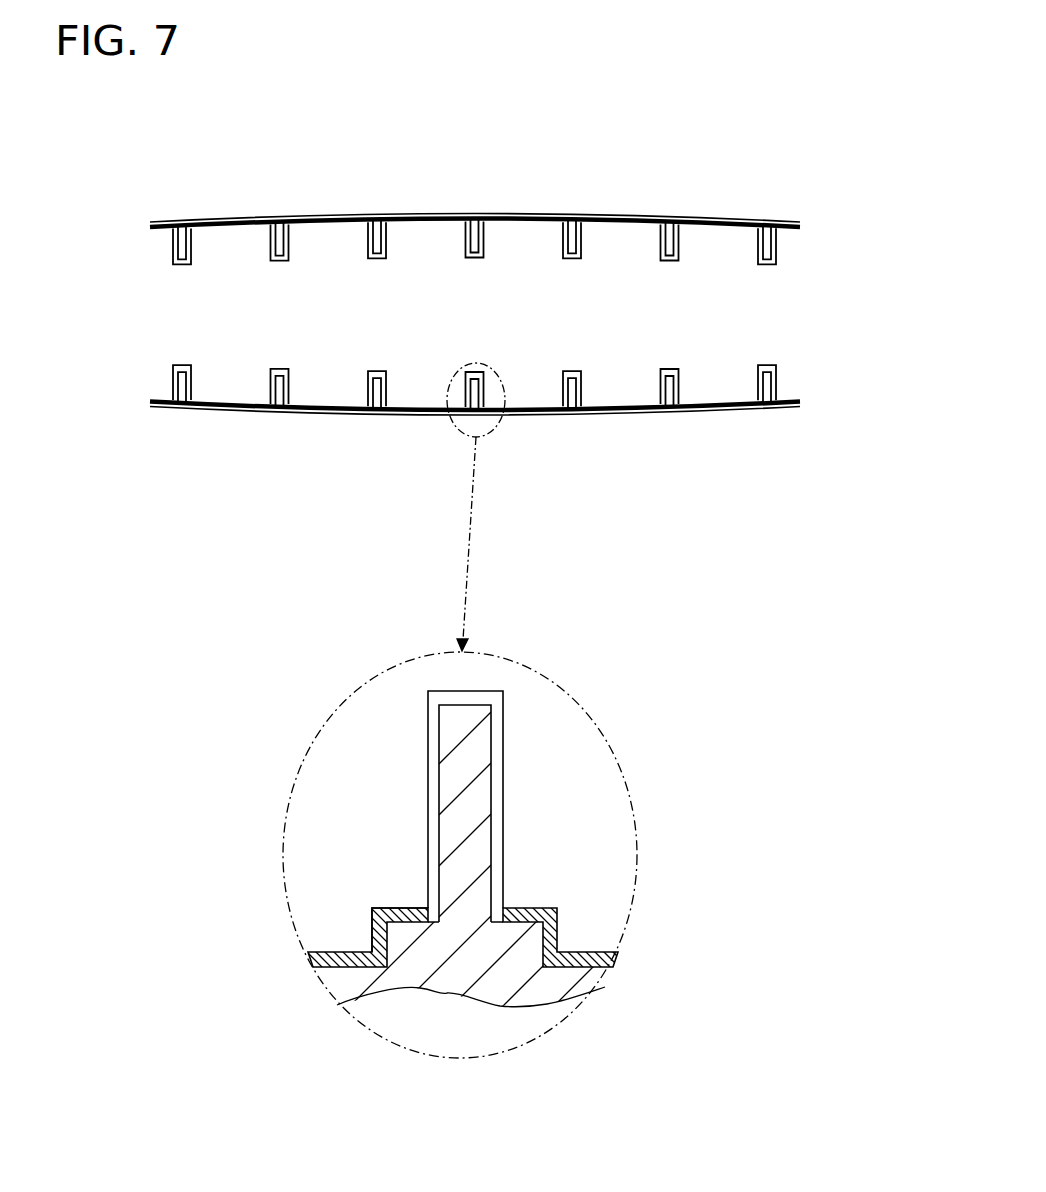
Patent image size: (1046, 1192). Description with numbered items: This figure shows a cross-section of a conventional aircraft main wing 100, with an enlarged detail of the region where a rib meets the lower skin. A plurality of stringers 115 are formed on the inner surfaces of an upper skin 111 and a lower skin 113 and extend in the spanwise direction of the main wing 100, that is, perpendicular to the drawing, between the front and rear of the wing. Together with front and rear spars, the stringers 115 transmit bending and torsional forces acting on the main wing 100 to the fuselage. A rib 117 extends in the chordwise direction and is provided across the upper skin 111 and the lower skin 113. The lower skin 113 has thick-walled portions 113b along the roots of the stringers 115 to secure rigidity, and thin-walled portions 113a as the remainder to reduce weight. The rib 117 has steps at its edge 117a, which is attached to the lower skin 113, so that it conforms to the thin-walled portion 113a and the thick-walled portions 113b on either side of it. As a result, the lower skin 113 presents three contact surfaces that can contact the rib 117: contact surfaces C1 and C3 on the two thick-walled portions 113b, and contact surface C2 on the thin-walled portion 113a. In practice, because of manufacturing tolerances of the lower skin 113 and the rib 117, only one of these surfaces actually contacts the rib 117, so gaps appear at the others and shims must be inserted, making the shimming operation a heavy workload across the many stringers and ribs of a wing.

The main wing 100 is at (508, 191).
The upper skin 111 is at (412, 214).
The lower skin 113 is at (410, 418).
The thin-walled portion 113a is at (338, 950).
The thick-walled portion 113b is at (393, 907).
The stringer 115 is at (288, 246).
The rib 117 is at (447, 318).
The edge of the rib 117a is at (593, 950).
The contact surface C1 is at (506, 906).
The contact surface C2 is at (568, 950).
The contact surface C3 is at (432, 917).